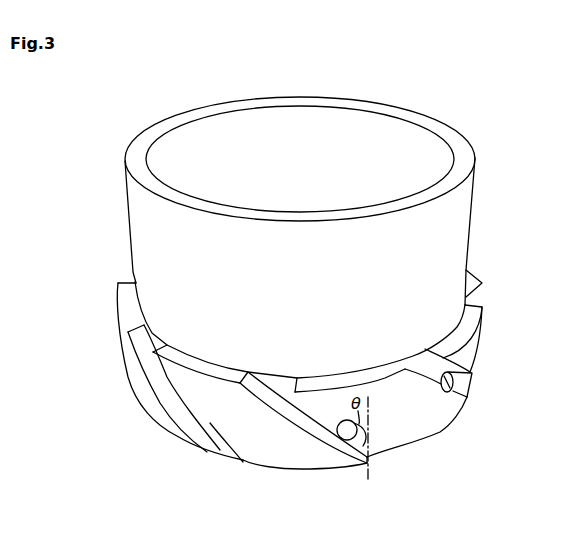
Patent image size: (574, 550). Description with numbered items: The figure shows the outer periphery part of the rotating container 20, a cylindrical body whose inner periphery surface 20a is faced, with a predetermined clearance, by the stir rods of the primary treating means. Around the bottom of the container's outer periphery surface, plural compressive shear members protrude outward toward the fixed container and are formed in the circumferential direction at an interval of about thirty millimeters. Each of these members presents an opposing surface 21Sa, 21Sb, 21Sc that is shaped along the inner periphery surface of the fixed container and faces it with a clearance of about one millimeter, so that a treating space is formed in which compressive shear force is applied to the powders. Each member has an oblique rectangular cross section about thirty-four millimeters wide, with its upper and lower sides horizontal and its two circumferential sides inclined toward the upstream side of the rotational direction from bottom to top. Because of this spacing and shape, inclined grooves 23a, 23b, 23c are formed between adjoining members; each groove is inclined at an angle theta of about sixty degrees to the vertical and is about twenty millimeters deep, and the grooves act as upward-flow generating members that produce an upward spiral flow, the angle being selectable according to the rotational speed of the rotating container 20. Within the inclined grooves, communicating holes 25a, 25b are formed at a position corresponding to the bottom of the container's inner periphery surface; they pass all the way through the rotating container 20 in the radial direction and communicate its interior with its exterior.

The rotating container 20 is at (486, 133).
The inner periphery surface 20a is at (382, 138).
The opposing surface 21Sa is at (433, 422).
The opposing surface 21Sb is at (272, 445).
The opposing surface 21Sc is at (143, 398).
The inclined groove 23a is at (418, 363).
The inclined groove 23b is at (280, 388).
The inclined groove 23c is at (160, 343).
The communicating hole 25a is at (456, 386).
The communicating hole 25b is at (341, 436).